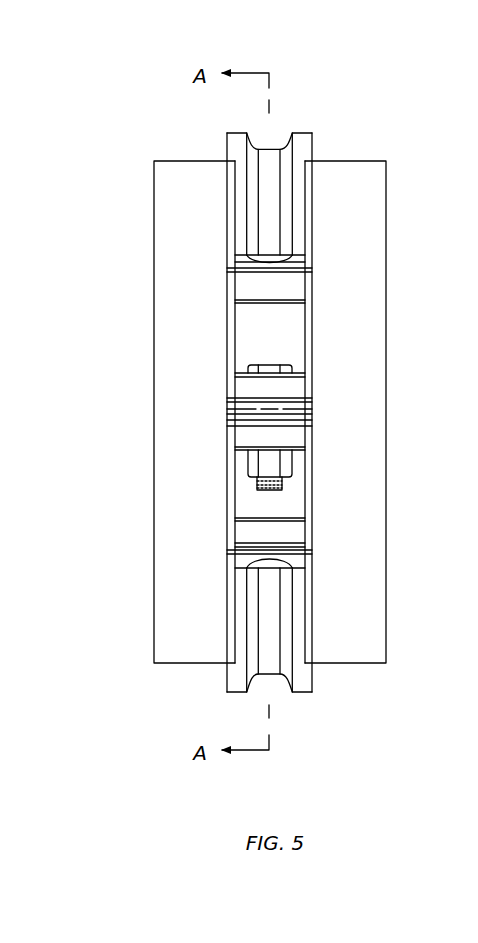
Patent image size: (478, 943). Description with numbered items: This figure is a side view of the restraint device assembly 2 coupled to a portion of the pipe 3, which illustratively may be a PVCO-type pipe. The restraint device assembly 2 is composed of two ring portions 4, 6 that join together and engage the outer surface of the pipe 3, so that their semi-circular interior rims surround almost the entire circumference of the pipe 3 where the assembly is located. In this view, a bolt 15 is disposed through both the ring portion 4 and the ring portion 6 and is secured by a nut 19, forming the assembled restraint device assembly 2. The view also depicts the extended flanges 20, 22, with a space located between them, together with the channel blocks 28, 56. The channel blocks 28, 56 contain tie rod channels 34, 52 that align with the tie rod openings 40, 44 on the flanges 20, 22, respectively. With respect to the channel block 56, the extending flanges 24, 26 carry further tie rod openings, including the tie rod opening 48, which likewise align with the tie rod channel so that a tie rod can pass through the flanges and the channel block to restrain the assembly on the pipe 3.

The restraint device assembly 2 is at (358, 119).
The pipe 3 is at (416, 166).
The ring portion 6 is at (358, 703).
The ring portion 4 is at (216, 316).
The bolt 15 is at (258, 365).
The nut 19 is at (248, 462).
The extended flange 20 is at (227, 133).
The extended flange 22 is at (312, 133).
The extending flange 24 is at (227, 690).
The extending flange 26 is at (312, 692).
The channel block 28 is at (288, 342).
The tie rod channel 34 is at (283, 268).
The tie rod opening 40 is at (227, 275).
The tie rod opening 44 is at (313, 275).
The tie rod opening 48 is at (227, 550).
The tie rod channel 52 is at (283, 545).
The channel block 56 is at (290, 483).